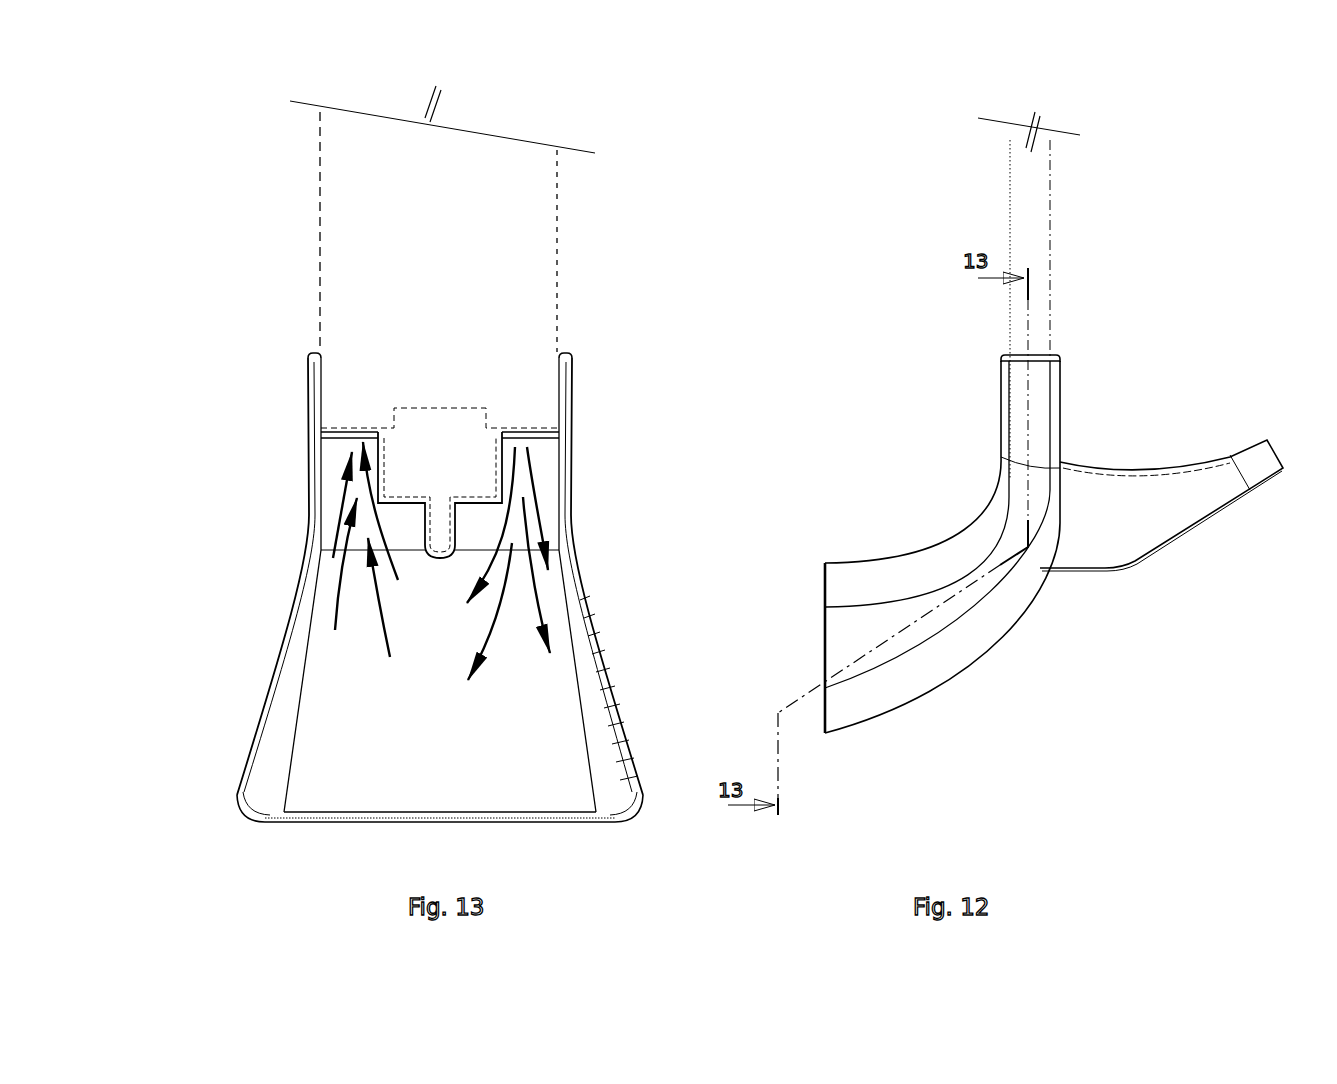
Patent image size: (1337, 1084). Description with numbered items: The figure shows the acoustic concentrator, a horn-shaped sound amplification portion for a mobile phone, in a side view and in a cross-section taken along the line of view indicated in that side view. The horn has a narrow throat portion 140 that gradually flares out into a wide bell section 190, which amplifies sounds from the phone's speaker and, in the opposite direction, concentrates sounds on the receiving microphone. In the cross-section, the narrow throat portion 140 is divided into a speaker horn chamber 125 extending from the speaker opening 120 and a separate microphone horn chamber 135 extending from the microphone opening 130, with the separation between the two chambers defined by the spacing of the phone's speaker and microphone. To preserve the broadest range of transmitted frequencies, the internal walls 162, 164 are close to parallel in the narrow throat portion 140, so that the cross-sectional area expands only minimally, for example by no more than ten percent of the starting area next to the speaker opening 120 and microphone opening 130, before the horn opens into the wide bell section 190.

The speaker opening 120 is at (533, 428).
The speaker horn chamber 125 is at (543, 481).
The microphone opening 130 is at (366, 430).
The microphone horn chamber 135 is at (330, 490).
The narrow throat portion 140 is at (584, 493).
The internal wall 162 is at (280, 710).
The internal wall 164 is at (612, 733).
The wide bell section 190 is at (620, 680).